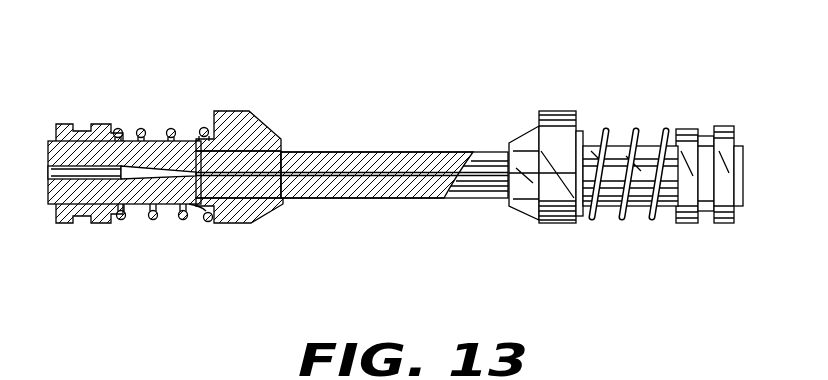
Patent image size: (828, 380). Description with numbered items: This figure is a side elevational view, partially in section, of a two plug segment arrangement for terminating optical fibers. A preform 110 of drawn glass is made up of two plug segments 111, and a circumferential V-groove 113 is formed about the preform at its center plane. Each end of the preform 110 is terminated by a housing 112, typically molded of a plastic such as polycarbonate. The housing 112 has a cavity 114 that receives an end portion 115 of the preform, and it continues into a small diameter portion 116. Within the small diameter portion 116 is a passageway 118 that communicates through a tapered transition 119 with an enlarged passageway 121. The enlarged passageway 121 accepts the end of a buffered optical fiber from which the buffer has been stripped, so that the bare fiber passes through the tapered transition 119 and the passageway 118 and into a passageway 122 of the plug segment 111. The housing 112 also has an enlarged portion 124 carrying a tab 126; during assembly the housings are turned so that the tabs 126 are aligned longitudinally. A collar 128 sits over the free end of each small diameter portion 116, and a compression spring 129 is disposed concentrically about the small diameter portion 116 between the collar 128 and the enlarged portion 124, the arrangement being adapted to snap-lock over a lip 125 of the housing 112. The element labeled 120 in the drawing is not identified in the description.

The preform 110 is at (340, 151).
The plug segment 111 is at (398, 197).
The housing 112 is at (268, 135).
The circumferential V-groove 113 is at (393, 152).
The cavity 114 is at (273, 188).
The end portion 115 is at (228, 190).
The small diameter portion 116 is at (160, 219).
The passageway 118 is at (190, 212).
The tapered transition 119 is at (148, 166).
The cap nut 120 is at (70, 222).
The enlarged passageway 121 is at (85, 168).
The passageway 122 is at (424, 176).
The enlarged portion 124 is at (258, 222).
The lip 125 is at (205, 127).
The tab 126 is at (228, 111).
The collar 128 is at (720, 224).
The compression spring 129 is at (167, 126).